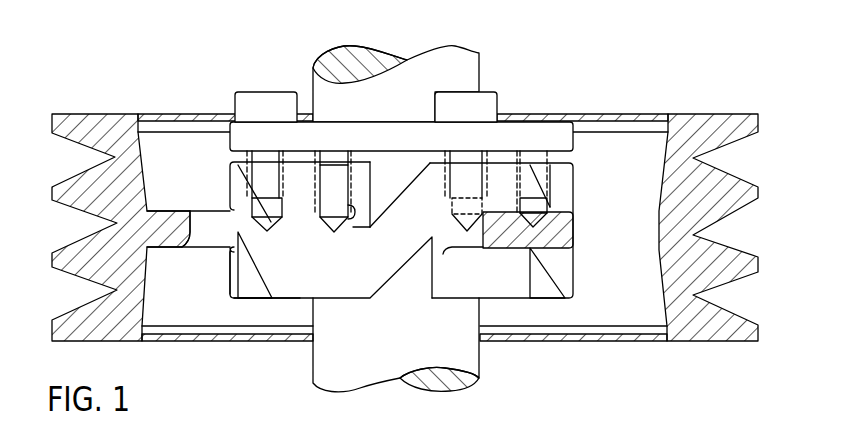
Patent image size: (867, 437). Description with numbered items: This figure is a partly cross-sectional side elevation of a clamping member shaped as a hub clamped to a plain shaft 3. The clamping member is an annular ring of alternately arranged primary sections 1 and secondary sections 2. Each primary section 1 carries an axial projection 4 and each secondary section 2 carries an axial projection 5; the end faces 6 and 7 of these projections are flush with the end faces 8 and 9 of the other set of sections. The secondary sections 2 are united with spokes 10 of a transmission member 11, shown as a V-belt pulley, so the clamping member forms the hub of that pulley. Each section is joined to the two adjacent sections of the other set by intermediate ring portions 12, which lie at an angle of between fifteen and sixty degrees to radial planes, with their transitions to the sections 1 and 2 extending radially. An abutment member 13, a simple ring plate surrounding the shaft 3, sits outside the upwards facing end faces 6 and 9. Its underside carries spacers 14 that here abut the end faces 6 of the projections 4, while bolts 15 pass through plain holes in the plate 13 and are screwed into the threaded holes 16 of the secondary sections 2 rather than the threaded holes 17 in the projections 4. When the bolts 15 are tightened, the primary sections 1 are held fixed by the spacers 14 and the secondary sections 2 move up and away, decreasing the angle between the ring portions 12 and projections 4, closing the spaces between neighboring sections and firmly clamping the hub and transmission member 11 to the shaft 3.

The primary section 1 is at (297, 278).
The secondary section 2 is at (240, 187).
The shaft 3 is at (468, 62).
The axial projection 4 is at (300, 173).
The axial projection 5 is at (230, 288).
The end face 6 is at (343, 163).
The end face 7 is at (526, 287).
The end face 8 is at (263, 298).
The end face 9 is at (505, 162).
The spoke 10 is at (167, 236).
The transmission member 11 is at (670, 163).
The intermediate ring portion 12 is at (230, 248).
The abutment member 13 is at (553, 132).
The spacer 14 is at (292, 222).
The bolt 15 is at (248, 103).
The threaded hole 16 is at (281, 216).
The threaded hole 17 is at (350, 216).